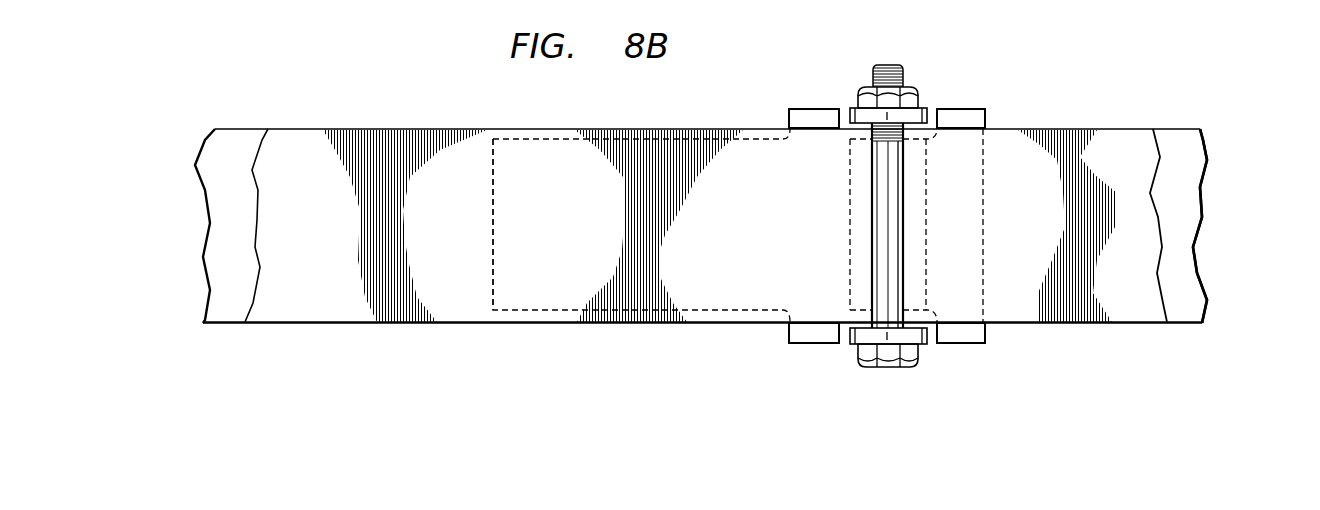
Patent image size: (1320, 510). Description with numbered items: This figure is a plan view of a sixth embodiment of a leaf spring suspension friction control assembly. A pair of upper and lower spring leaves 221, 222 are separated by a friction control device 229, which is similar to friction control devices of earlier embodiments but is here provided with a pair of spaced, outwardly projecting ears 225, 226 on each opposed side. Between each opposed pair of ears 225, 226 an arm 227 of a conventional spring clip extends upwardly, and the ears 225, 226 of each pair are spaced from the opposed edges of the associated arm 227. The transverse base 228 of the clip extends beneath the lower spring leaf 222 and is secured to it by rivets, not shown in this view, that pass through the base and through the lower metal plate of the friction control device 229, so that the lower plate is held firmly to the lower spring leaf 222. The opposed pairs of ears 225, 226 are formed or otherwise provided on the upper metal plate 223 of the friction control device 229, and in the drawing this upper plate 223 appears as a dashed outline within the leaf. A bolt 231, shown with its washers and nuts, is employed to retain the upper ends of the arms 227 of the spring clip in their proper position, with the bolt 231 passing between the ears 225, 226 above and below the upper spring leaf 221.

The upper spring leaf 221 is at (1098, 152).
The lower spring leaf 222 is at (1205, 204).
The upper metal plate 223 is at (506, 185).
The ear 225 is at (795, 108).
The ear 226 is at (962, 108).
The arm of spring clip 227 is at (852, 107).
The transverse base of clip 228 is at (922, 250).
The friction control device 229 is at (481, 289).
The bolt 231 is at (880, 230).